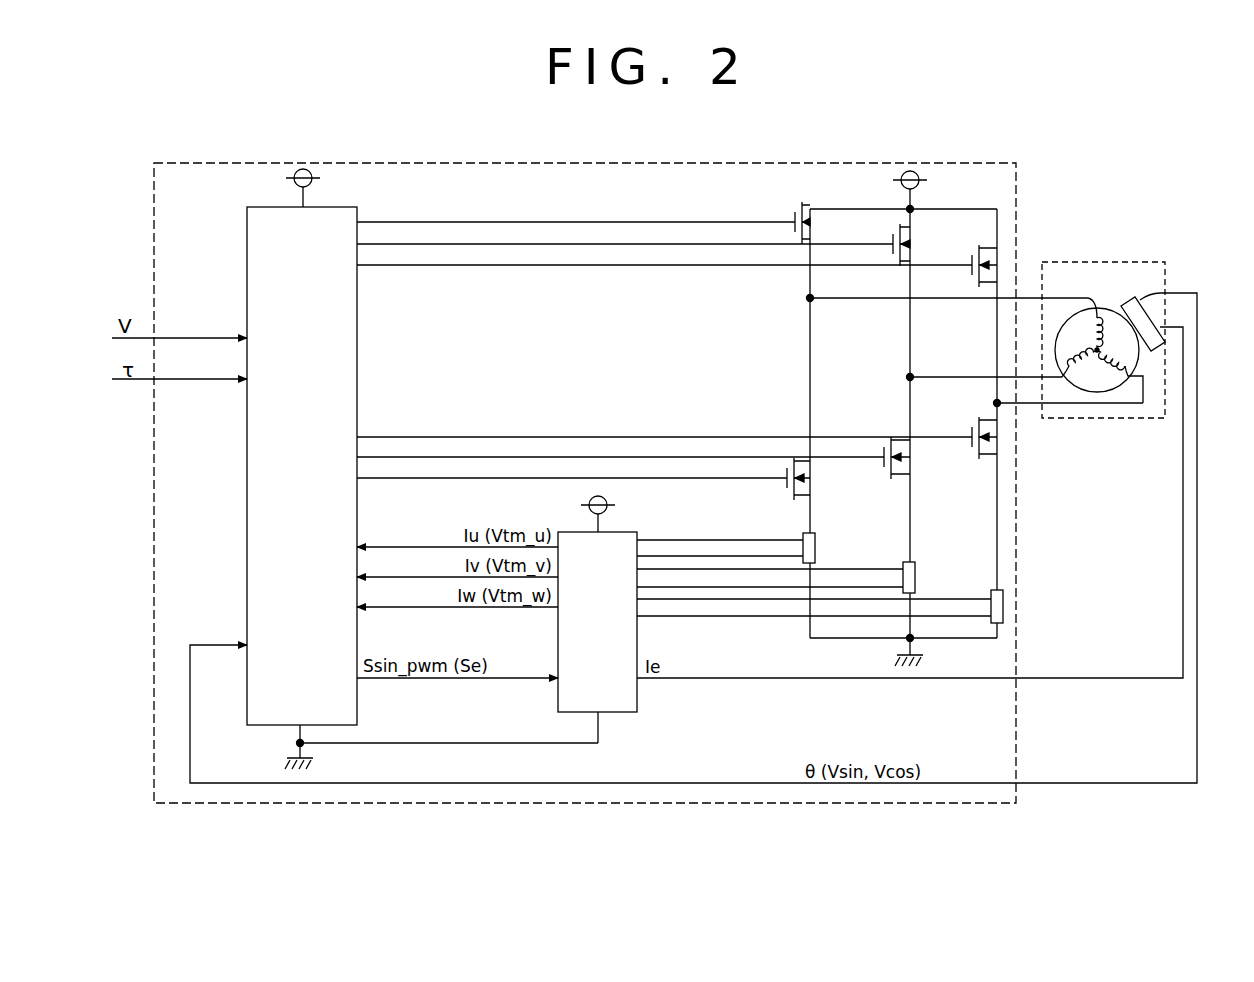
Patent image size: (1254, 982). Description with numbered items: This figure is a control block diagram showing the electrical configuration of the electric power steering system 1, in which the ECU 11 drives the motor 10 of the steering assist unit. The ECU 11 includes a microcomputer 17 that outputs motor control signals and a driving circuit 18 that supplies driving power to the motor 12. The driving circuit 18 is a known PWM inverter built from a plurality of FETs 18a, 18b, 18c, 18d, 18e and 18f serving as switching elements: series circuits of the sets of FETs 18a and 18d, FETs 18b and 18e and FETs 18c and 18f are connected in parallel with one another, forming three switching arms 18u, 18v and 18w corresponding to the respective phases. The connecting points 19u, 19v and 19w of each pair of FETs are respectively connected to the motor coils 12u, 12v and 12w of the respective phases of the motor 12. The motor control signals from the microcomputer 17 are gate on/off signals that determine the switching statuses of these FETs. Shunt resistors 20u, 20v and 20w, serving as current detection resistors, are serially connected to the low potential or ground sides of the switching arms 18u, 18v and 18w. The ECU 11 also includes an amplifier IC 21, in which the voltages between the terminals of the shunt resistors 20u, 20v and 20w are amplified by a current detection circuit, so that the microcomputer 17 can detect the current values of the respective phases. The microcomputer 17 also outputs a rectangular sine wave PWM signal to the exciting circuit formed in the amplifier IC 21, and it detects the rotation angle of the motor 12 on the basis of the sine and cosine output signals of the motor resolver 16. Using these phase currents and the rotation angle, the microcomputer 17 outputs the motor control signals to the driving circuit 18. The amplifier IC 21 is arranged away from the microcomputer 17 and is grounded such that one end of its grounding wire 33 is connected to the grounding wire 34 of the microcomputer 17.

The motor control system 1 is at (1092, 168).
The motor 10 is at (1100, 262).
The ECU 11 is at (1018, 205).
The motor 12 is at (1120, 306).
The motor coil 12u is at (1093, 312).
The motor coil 12v is at (1080, 396).
The motor coil 12w is at (1114, 396).
The motor resolver 16 is at (1155, 298).
The microcomputer 17 is at (345, 205).
The driving circuit 18 is at (792, 200).
The FET 18a is at (802, 212).
The FET 18b is at (893, 230).
The FET 18c is at (974, 256).
The FET 18d is at (794, 485).
The FET 18e is at (888, 478).
The FET 18f is at (978, 458).
The switching arm 18u is at (806, 370).
The switching arm 18v is at (906, 344).
The switching arm 18w is at (994, 352).
The connecting point 19u is at (806, 298).
The connecting point 19v is at (907, 378).
The connecting point 19w is at (994, 403).
The shunt resistor 20u is at (818, 548).
The shunt resistor 20v is at (916, 566).
The shunt resistor 20w is at (990, 600).
The amplifier IC 21 is at (622, 532).
The grounding wire 33 is at (440, 742).
The grounding wire 34 is at (296, 742).